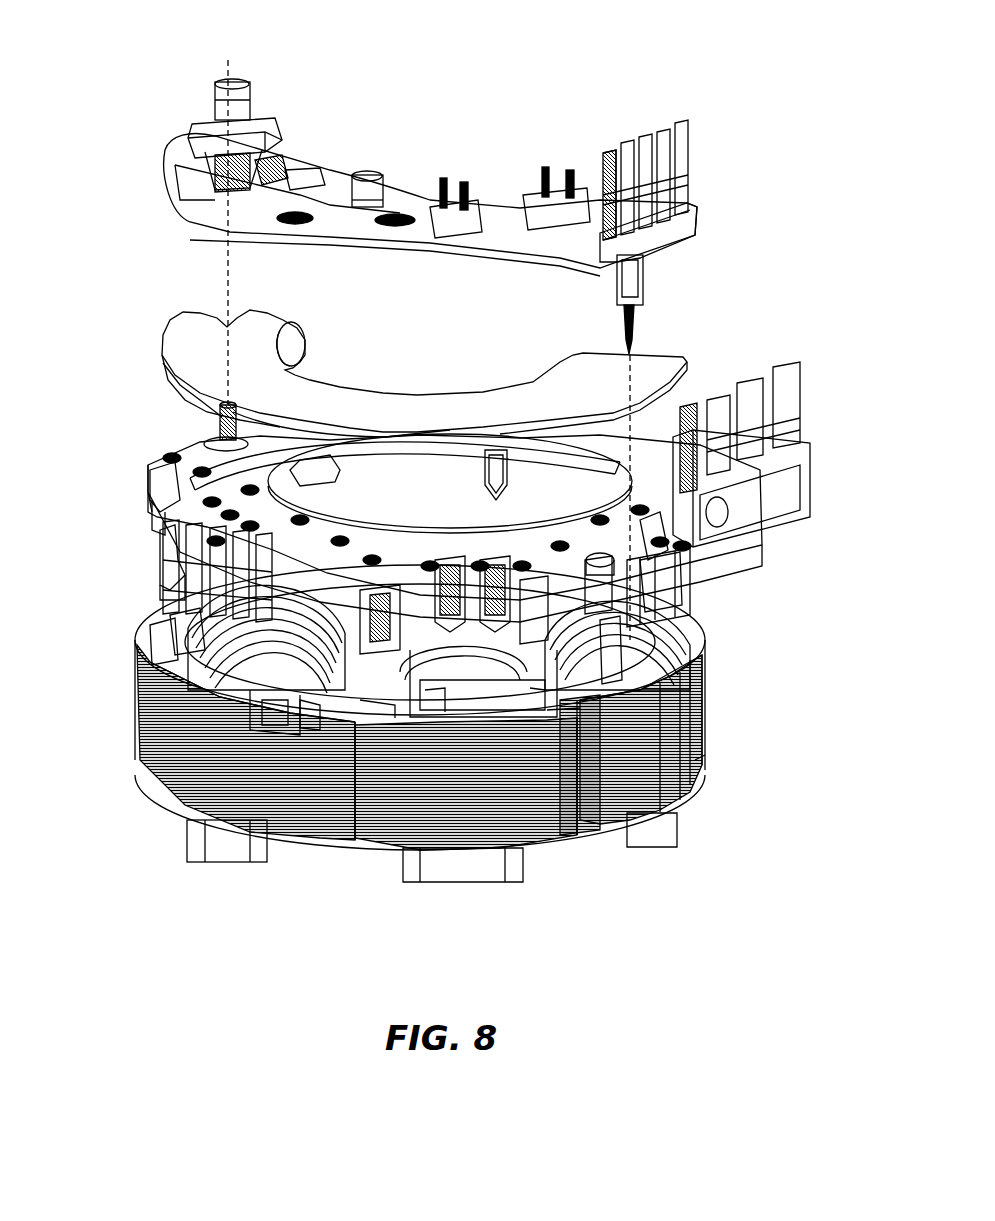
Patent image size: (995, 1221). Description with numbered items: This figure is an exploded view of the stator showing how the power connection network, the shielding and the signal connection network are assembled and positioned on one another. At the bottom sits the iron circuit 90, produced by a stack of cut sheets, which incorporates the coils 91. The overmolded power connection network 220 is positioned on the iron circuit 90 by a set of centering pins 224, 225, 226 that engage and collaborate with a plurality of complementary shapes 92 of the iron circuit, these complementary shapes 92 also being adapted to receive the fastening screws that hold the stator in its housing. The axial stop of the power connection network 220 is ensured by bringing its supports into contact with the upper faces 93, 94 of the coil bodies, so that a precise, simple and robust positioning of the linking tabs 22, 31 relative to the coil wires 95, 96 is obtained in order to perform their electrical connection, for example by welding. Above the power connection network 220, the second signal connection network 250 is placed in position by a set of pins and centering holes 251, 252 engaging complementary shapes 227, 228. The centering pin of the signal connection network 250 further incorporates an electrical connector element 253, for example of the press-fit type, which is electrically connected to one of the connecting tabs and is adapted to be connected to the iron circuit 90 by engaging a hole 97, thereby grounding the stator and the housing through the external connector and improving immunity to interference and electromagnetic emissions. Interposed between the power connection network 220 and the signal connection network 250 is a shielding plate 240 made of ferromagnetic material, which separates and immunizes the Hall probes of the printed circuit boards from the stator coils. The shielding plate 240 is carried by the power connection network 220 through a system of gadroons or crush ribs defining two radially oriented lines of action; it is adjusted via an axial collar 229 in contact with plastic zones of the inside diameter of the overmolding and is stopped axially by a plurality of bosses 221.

The second signal connection network 250 is at (440, 212).
The centering hole 252 is at (235, 64).
The centering pin 251 is at (645, 284).
The electrical connector element 253 is at (633, 317).
The shielding plate 240 is at (457, 402).
The axial collar 229 is at (357, 410).
The overmolded power connection network 220 is at (182, 461).
The complementary shape 228 is at (159, 388).
The boss 221 is at (177, 471).
The centering pin 226 is at (166, 562).
The centering pin 225 is at (610, 440).
The complementary shape 227 is at (690, 550).
The centering pin 224 is at (688, 590).
The iron circuit 90 is at (684, 802).
The complementary shape 92 is at (703, 695).
The hole 97 is at (707, 753).
The upper face of coil body 93 is at (172, 822).
The upper face of coil body 94 is at (212, 822).
The coil 91 is at (297, 847).
The linking tab 22 is at (388, 852).
The coil wire 95 is at (447, 832).
The coil wire 96 is at (551, 845).
The linking tab 31 is at (581, 835).